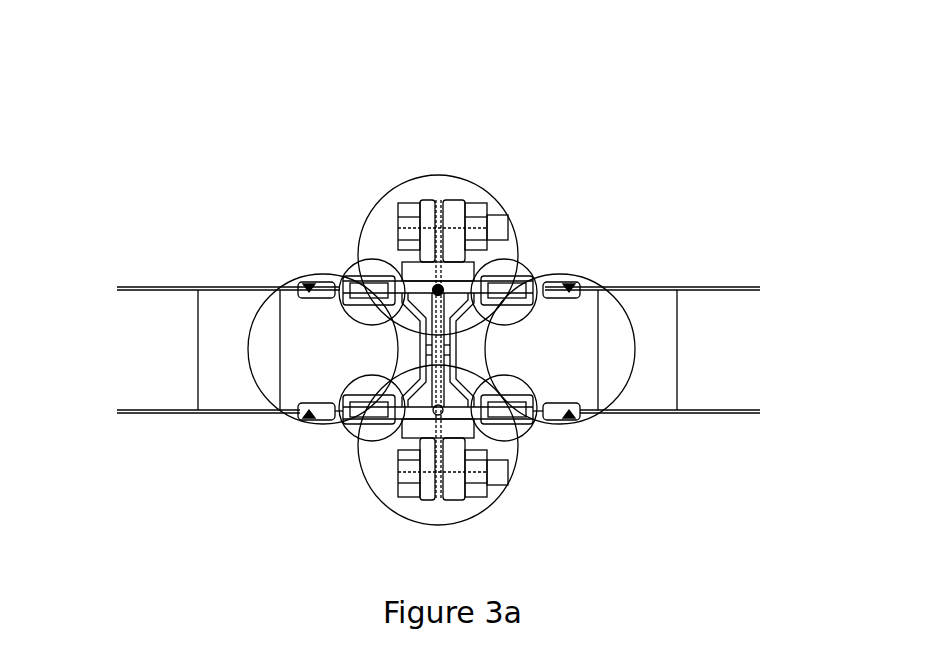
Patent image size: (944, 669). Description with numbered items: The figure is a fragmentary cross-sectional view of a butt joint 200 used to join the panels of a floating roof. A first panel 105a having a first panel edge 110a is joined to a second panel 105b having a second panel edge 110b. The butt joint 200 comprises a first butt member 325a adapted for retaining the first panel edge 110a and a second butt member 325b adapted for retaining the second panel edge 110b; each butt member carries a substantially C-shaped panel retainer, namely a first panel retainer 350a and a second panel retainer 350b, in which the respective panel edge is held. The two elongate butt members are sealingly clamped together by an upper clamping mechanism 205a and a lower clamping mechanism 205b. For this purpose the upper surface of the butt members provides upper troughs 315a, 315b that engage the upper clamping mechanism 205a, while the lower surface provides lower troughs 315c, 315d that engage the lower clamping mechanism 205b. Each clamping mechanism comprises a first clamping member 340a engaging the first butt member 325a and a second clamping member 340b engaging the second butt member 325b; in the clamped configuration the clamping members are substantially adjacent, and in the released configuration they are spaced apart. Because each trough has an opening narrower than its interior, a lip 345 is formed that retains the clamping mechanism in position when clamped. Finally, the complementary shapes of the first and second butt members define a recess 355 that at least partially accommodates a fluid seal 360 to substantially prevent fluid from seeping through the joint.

The butt joint 200 is at (655, 142).
The first panel 105a is at (200, 287).
The second panel 105b is at (687, 286).
The first panel edge 110a is at (318, 420).
The second panel edge 110b is at (552, 422).
The upper clamping mechanism 205a is at (373, 212).
The lower clamping mechanism 205b is at (395, 507).
The upper trough 315a is at (350, 274).
The upper trough 315b is at (522, 302).
The lower trough 315c is at (360, 437).
The lower trough 315d is at (523, 432).
The first butt member 325a is at (330, 420).
The second butt member 325b is at (540, 423).
The first clamping member 340a is at (427, 197).
The second clamping member 340b is at (462, 196).
The lip 345 is at (472, 312).
The first panel retainer 350a is at (248, 352).
The second panel retainer 350b is at (635, 350).
The recess 355 is at (490, 483).
The fluid seal 360 is at (441, 287).